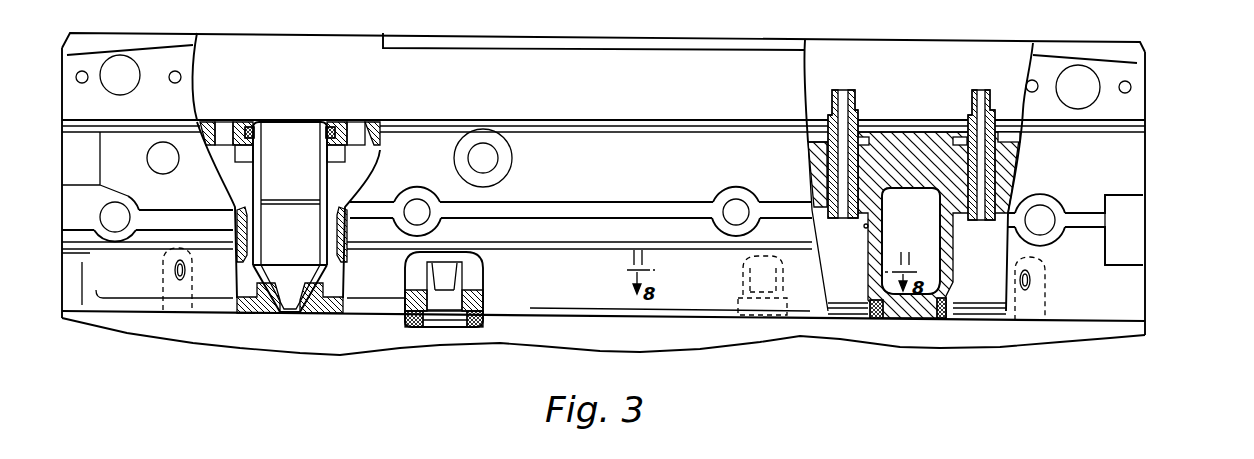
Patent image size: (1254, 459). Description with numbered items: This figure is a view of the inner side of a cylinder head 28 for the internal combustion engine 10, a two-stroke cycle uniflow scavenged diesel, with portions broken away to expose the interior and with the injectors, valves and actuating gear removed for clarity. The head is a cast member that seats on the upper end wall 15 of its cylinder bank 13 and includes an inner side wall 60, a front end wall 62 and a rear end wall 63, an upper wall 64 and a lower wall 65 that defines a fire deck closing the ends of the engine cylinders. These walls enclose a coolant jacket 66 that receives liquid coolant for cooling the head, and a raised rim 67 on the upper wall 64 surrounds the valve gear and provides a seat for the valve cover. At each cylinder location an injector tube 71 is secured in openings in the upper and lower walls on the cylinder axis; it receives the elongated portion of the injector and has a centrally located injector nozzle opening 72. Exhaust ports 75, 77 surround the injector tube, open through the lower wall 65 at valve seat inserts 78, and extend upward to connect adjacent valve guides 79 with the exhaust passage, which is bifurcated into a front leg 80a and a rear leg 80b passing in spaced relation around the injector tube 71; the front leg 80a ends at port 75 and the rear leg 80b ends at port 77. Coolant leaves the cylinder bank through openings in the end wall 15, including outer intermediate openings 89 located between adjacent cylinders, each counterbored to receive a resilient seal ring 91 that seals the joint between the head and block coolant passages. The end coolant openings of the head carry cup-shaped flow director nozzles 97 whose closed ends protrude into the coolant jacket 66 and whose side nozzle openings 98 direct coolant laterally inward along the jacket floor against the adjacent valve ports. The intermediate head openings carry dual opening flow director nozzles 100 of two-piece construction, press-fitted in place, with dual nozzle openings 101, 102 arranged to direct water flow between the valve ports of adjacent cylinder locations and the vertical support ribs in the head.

The internal combustion engine 10 is at (1163, 195).
The cylinder bank 13 is at (1130, 330).
The upper end wall 15 is at (667, 310).
The cylinder head 28 is at (1140, 282).
The inner side wall 60 is at (603, 184).
The front end wall 62 is at (1147, 140).
The rear end wall 63 is at (62, 163).
The upper wall 64 is at (377, 122).
The lower wall 65 is at (537, 316).
The coolant jacket 66 is at (357, 162).
The raised rim 67 is at (567, 58).
The injector tube 71 is at (322, 150).
The injector nozzle opening 72 is at (292, 313).
The exhaust port 75 is at (960, 283).
The exhaust port 77 is at (866, 223).
The valve seat insert 78 is at (880, 307).
The valve guide 79 is at (957, 113).
The front leg of exhaust passage 80a is at (347, 230).
The rear leg of exhaust passage 80b is at (235, 223).
The outer intermediate opening 89 is at (437, 323).
The resilient seal ring 91 is at (450, 322).
The flow director nozzle 97 is at (165, 262).
The side nozzle opening 98 is at (180, 280).
The dual opening flow director nozzle 100 is at (450, 258).
The nozzle opening 101 is at (408, 271).
The nozzle opening 102 is at (483, 275).